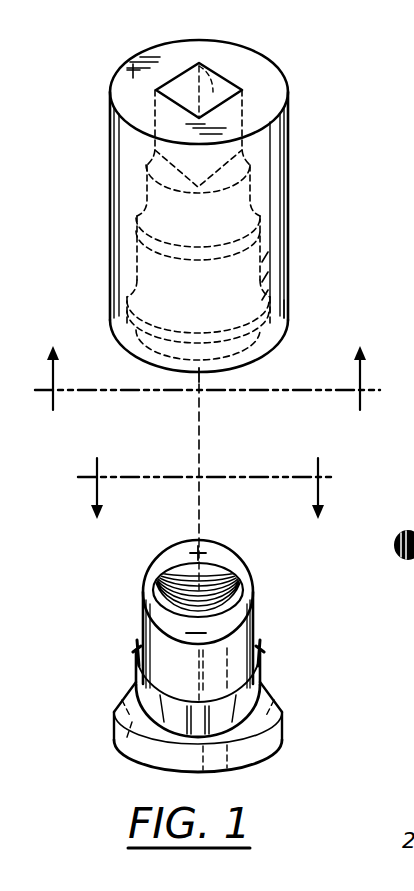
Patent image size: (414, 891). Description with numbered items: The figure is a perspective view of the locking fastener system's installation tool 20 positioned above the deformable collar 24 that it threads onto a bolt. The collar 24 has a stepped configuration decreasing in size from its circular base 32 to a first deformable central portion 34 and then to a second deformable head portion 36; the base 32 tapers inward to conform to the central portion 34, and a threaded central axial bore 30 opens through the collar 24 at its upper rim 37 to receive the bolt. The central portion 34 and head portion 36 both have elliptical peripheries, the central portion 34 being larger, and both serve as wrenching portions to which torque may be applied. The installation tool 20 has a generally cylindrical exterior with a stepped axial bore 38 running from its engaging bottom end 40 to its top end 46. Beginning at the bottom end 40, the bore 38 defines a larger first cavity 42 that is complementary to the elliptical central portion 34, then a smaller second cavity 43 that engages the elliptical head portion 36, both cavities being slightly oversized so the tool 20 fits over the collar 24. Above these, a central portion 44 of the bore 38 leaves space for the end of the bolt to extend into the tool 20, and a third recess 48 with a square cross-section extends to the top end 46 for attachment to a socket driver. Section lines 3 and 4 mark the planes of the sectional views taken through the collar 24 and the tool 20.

The installation tool 20 is at (321, 115).
The collar 24 is at (110, 608).
The central axial bore 30 is at (225, 592).
The circular base 32 is at (279, 705).
The central portion 34 is at (146, 706).
The head portion 36 is at (255, 640).
The upper rim 37 is at (213, 553).
The stepped axial bore 38 is at (262, 190).
The bottom end 40 is at (282, 342).
The larger first cavity 42 is at (156, 354).
The smaller second cavity 43 is at (276, 266).
The central portion of the bore 44 is at (160, 197).
The top end 46 is at (134, 80).
The third recess 48 is at (200, 63).
The section line 3- 3 is at (208, 481).
The section line 4- 4 is at (207, 363).